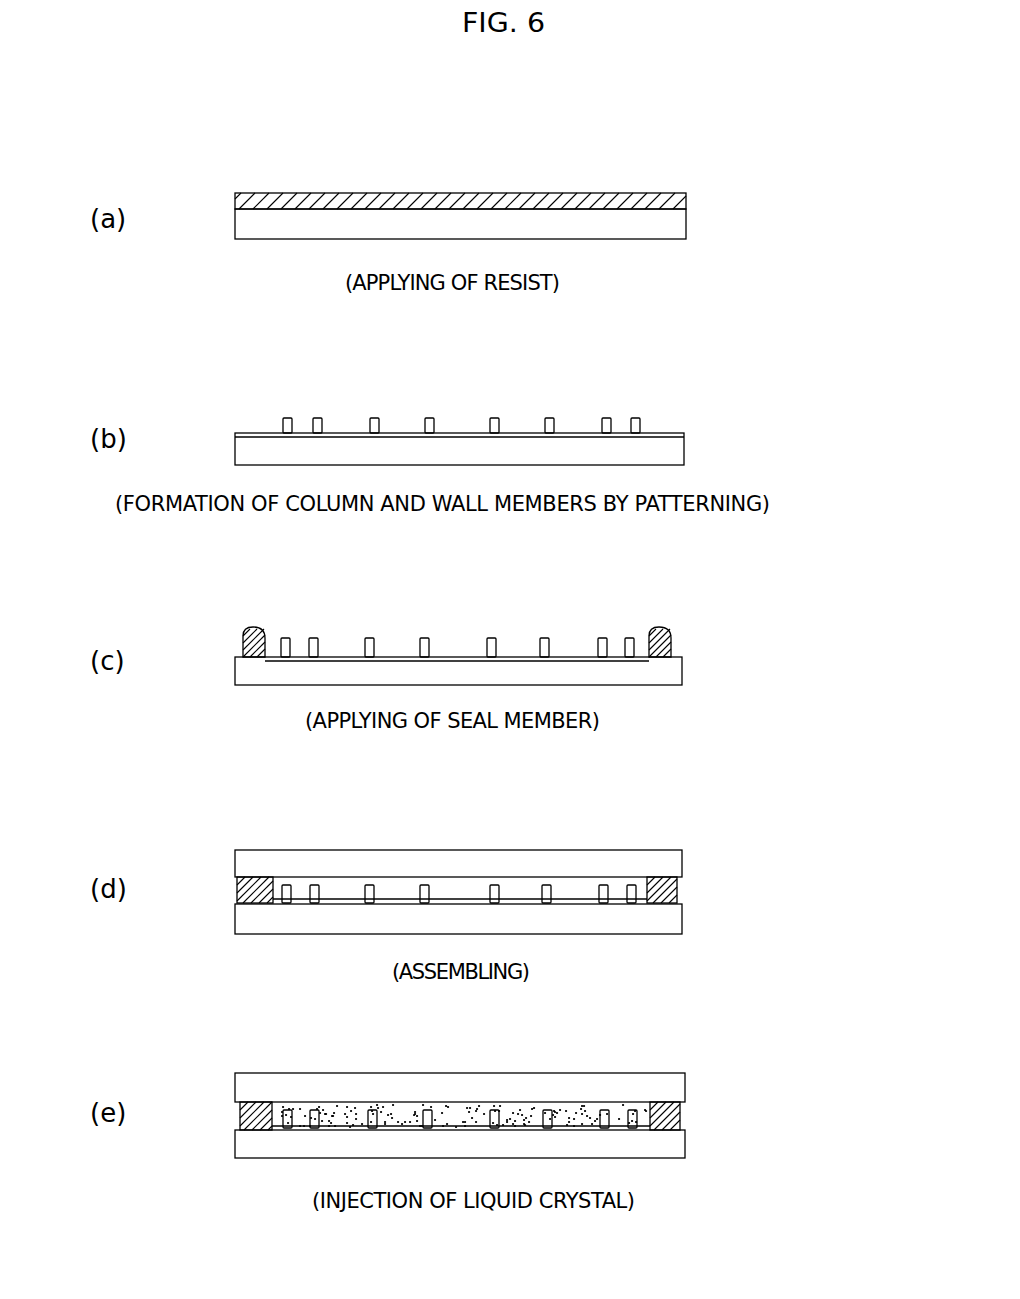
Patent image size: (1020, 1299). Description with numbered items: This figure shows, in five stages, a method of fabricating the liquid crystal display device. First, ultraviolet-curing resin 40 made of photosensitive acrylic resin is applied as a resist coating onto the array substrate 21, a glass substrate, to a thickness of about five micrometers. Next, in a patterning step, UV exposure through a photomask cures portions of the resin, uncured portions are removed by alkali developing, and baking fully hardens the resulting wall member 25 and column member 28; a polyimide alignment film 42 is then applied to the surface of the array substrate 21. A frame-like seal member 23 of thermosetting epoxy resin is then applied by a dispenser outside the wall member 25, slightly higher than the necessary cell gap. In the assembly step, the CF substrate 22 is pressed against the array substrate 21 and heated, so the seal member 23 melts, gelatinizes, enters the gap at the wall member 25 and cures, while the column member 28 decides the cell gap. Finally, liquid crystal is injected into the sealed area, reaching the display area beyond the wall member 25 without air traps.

The array substrate 21 is at (645, 240).
The CF substrate 22 is at (643, 850).
The seal member 23 is at (262, 631).
The wall member 25 is at (325, 407).
The column member 28 is at (557, 407).
The ultraviolet-curing resin 40 is at (632, 193).
The polyimide alignment film 42 is at (662, 433).